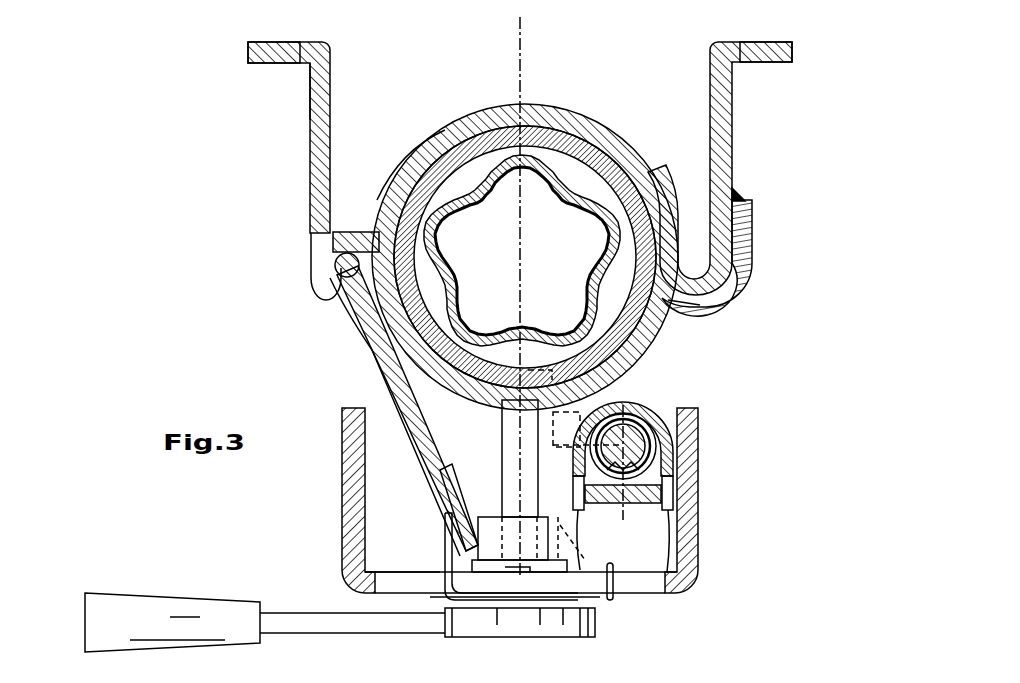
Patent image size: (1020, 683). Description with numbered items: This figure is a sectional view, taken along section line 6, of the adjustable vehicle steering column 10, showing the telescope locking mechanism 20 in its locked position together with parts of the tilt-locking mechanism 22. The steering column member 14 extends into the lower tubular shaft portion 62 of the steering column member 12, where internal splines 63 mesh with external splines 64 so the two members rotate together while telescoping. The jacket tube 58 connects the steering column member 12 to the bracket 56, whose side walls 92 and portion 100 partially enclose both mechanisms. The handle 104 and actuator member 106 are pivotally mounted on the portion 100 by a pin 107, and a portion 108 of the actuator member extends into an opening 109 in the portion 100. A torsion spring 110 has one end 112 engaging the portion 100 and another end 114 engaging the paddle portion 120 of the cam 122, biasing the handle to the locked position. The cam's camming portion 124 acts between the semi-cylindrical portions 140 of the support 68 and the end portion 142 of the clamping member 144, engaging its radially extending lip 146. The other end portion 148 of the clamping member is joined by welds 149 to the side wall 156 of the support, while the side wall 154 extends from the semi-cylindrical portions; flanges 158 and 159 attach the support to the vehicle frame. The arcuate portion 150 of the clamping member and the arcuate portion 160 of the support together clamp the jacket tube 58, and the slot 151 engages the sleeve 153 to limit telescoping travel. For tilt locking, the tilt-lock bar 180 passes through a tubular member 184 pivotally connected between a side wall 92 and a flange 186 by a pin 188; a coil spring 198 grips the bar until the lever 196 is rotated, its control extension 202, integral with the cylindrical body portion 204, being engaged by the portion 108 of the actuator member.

The section line 6 is at (520, 17).
The vehicle steering column 10 is at (268, 189).
The steering column member 12 is at (560, 152).
The steering column member 14 is at (652, 347).
The telescope locking mechanism 20 is at (268, 298).
The tilt-locking mechanism 22 is at (712, 392).
The bracket 56 is at (688, 585).
The jacket tube 58 is at (486, 136).
The lower tubular shaft portion 62 is at (590, 162).
The internal splines 63 is at (700, 308).
The external splines 64 is at (640, 180).
The support 68 is at (318, 48).
The side walls 92 is at (343, 438).
The portion of the bracket 100 is at (660, 598).
The handle 104 is at (175, 622).
The actuator member 106 is at (527, 622).
The pin 107 is at (520, 583).
The portion of the actuator member 108 is at (512, 528).
The opening 109 is at (390, 587).
The torsion spring 110 is at (447, 590).
The end of the spring 112 is at (612, 603).
The other end of the spring 114 is at (445, 522).
The paddle portion 120 is at (447, 474).
The cam 122 is at (363, 337).
The camming portion 124 is at (347, 231).
The semi-cylindrical portions 140 is at (330, 285).
The end portion 142 is at (412, 162).
The clamping member 144 is at (390, 358).
The lip 146 is at (320, 248).
The end portion 148 is at (742, 266).
The welds 149 is at (740, 193).
The arcuate portion 150 is at (650, 368).
The slot 151 is at (516, 405).
The sleeve 153 is at (530, 413).
The side wall 154 is at (314, 107).
The side wall 156 is at (730, 90).
The flange 158 is at (264, 47).
The flange 159 is at (752, 48).
The arcuate portion 160 is at (538, 112).
The tilt-lock bar 180 is at (675, 418).
The tubular member 184 is at (658, 448).
The flange 186 is at (531, 467).
The pin 188 is at (636, 500).
The lever 196 is at (665, 505).
The coil spring 198 is at (676, 500).
The control extension 202 is at (581, 610).
The cylindrical body portion 204 is at (622, 400).